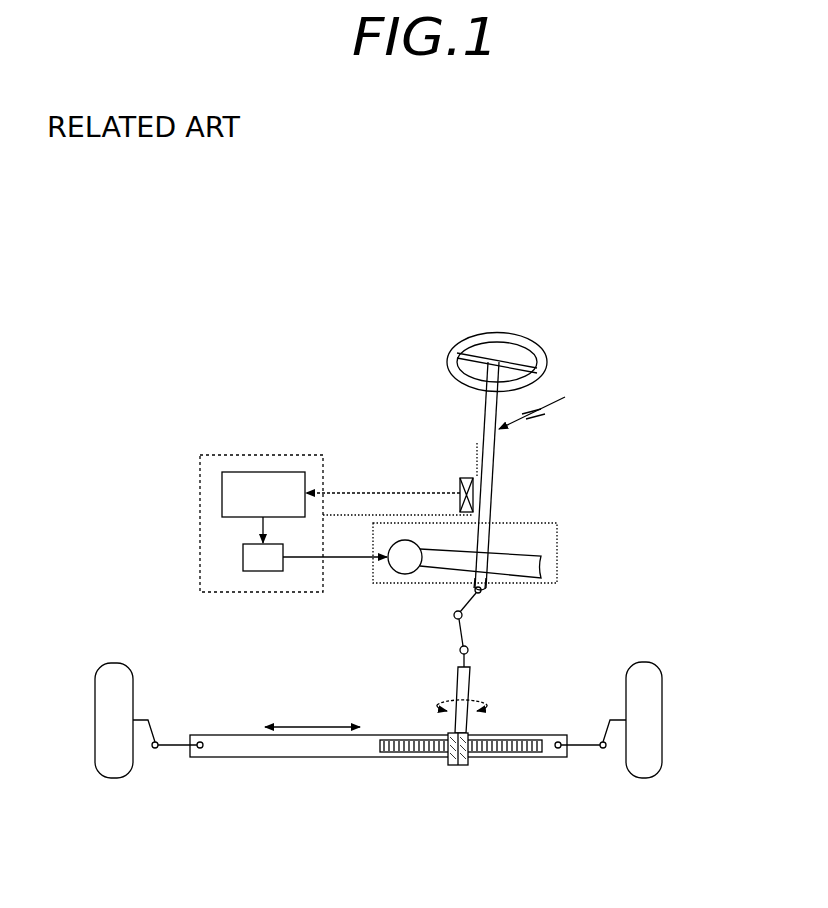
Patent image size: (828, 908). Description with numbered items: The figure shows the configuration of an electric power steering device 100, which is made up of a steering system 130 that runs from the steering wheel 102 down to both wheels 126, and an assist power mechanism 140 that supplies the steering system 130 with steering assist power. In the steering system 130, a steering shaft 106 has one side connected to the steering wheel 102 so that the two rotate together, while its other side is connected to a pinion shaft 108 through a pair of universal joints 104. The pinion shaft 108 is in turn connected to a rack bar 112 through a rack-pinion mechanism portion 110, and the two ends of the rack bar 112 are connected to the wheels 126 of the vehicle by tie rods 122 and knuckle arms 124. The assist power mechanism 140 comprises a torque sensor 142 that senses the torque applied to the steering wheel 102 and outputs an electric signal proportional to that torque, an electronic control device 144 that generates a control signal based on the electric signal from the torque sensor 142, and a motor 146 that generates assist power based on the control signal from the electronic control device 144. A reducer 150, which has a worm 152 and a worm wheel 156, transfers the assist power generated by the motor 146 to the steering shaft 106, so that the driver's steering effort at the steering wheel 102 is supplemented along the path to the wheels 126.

The electric power steering device 100 is at (243, 287).
The steering wheel 102 is at (449, 351).
The universal joints 104 is at (470, 606).
The steering shaft 106 is at (494, 441).
The pinion shaft 108 is at (452, 690).
The rack-pinion mechanism portion 110 is at (485, 768).
The rack bar 112 is at (251, 738).
The tie rods 122 is at (590, 741).
The knuckle arms 124 is at (144, 713).
The wheels 126 is at (655, 670).
The steering system 130 is at (548, 406).
The assist power mechanism 140 is at (200, 468).
The torque sensor 142 is at (461, 485).
The electronic control device 144 is at (305, 476).
The motor 146 is at (243, 556).
The reducer 150 is at (556, 558).
The worm 152 is at (404, 565).
The worm wheel 156 is at (490, 550).